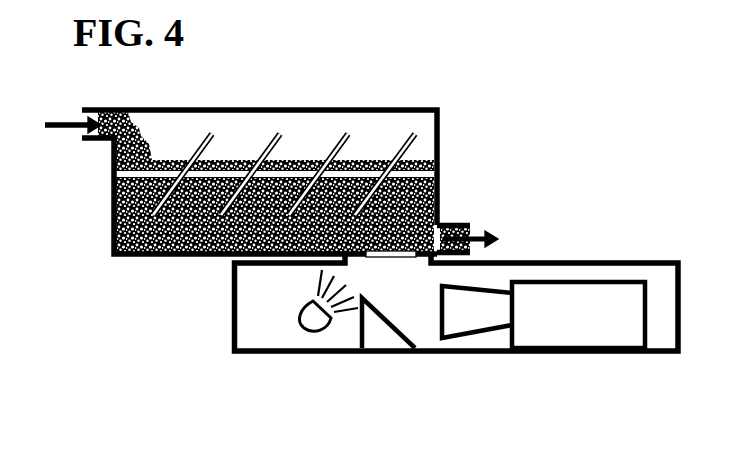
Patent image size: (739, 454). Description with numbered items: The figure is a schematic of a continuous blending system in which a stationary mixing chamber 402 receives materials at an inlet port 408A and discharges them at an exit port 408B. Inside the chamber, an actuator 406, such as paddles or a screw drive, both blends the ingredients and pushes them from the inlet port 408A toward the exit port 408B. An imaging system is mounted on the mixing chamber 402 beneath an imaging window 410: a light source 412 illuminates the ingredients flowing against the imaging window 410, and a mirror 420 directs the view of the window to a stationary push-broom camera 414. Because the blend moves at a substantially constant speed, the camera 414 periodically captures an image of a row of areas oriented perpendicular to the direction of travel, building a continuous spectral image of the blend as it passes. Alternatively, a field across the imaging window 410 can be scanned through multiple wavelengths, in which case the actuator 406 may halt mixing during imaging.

The mixing chamber 402 is at (270, 108).
The actuator 406 is at (413, 137).
The inlet port 408A is at (92, 108).
The exit port 408B is at (457, 224).
The imaging window 410 is at (397, 258).
The light source 412 is at (302, 325).
The camera 414 is at (567, 327).
The mirror 420 is at (393, 320).